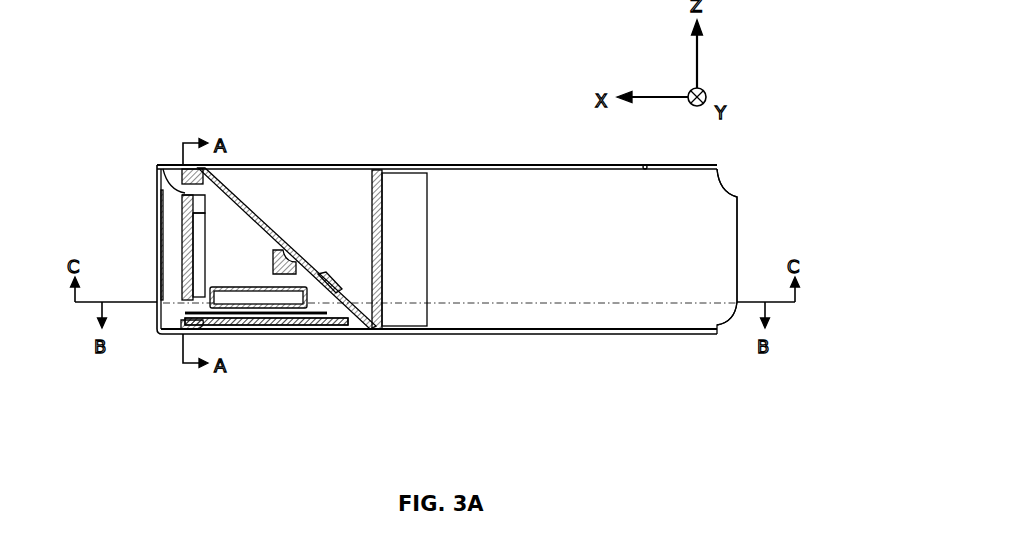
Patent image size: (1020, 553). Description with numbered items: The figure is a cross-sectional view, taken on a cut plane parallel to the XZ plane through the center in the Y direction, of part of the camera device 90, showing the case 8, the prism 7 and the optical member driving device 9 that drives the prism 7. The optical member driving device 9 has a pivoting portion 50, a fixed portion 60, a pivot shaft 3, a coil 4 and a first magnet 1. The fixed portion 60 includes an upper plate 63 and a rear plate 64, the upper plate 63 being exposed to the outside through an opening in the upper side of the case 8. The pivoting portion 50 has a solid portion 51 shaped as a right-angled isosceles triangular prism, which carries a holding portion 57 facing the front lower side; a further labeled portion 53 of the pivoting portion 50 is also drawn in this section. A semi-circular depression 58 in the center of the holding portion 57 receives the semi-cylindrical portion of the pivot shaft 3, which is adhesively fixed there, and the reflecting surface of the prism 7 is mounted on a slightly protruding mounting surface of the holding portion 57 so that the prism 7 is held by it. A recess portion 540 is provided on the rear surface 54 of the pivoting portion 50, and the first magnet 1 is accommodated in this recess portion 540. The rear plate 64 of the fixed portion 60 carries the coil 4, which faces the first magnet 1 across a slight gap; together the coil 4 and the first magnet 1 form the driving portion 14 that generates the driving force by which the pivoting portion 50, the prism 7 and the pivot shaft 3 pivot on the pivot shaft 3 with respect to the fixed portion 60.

The first magnet 1 is at (260, 333).
The pivot shaft 3 is at (293, 258).
The coil 4 is at (303, 333).
The prism 7 is at (342, 228).
The case 8 is at (718, 167).
The optical member driving device 9 is at (398, 106).
The driving portion 14 is at (266, 380).
The pivoting portion 50 is at (252, 236).
The solid portion 51 is at (163, 165).
The side support portion 53 is at (180, 194).
The rear surface 54 is at (300, 304).
The holding portion 57 is at (368, 335).
The depression 58 is at (294, 250).
The fixed portion 60 is at (137, 305).
The upper plate 63 is at (160, 214).
The rear plate 64 is at (183, 328).
The camera device 90 is at (437, 110).
The recess portion 540 is at (183, 292).